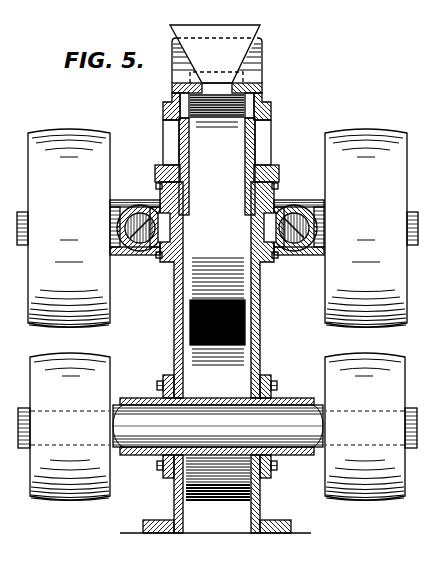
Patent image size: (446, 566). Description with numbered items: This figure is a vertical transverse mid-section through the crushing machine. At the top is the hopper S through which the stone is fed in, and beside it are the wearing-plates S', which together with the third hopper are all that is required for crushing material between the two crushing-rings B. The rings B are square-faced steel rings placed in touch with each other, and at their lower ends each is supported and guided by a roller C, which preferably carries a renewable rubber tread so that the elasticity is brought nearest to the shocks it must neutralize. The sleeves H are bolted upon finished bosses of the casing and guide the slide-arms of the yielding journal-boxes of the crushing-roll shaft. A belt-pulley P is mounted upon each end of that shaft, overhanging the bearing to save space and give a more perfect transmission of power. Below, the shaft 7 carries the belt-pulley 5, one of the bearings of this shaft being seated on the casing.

The hopper S is at (216, 59).
The wearing-plates S' is at (217, 141).
The belt-pulley P is at (217, 228).
The sleeves H is at (137, 205).
The crushing-rings B is at (237, 252).
The roller C is at (215, 453).
The belt-pulley 5 is at (217, 427).
The shaft 7 is at (218, 426).